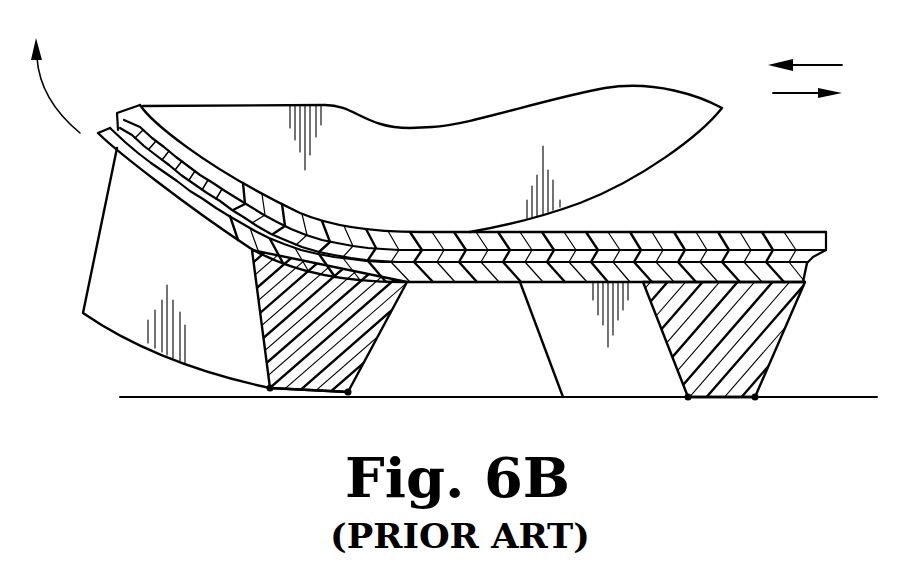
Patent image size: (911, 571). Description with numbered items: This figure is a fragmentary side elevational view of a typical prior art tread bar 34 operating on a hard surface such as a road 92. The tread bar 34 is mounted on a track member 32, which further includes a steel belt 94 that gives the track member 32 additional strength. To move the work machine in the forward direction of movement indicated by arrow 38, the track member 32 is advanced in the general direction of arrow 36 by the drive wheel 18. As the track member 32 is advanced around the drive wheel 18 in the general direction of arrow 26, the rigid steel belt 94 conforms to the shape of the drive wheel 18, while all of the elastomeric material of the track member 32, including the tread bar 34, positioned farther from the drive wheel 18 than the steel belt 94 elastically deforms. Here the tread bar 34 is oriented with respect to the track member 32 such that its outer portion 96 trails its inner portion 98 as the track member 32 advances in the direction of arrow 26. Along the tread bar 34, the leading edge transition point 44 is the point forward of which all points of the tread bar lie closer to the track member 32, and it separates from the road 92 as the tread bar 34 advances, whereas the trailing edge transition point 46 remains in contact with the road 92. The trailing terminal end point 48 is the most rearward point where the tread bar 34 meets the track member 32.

The drive wheel 18 is at (458, 130).
The arrow 26 is at (55, 97).
The track member 32 is at (817, 232).
The tread bar 34 is at (290, 408).
The arrow 36 is at (814, 63).
The arrow 38 is at (800, 95).
The leading edge transition point 44 is at (270, 387).
The trailing edge transition point 46 is at (760, 395).
The trailing terminal end point 48 is at (350, 391).
The road 92 is at (153, 398).
The steel belt 94 is at (808, 256).
The outer portion 96 is at (257, 298).
The inner portion 98 is at (103, 212).